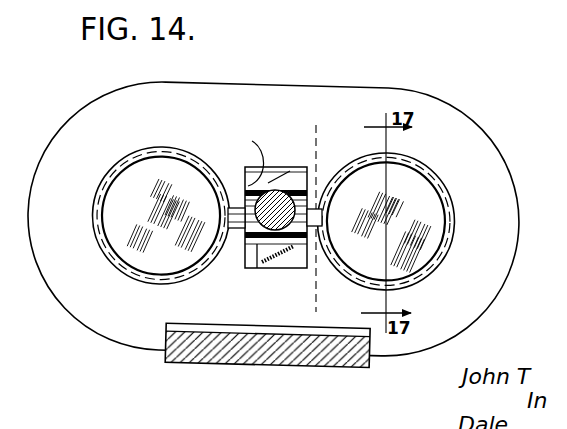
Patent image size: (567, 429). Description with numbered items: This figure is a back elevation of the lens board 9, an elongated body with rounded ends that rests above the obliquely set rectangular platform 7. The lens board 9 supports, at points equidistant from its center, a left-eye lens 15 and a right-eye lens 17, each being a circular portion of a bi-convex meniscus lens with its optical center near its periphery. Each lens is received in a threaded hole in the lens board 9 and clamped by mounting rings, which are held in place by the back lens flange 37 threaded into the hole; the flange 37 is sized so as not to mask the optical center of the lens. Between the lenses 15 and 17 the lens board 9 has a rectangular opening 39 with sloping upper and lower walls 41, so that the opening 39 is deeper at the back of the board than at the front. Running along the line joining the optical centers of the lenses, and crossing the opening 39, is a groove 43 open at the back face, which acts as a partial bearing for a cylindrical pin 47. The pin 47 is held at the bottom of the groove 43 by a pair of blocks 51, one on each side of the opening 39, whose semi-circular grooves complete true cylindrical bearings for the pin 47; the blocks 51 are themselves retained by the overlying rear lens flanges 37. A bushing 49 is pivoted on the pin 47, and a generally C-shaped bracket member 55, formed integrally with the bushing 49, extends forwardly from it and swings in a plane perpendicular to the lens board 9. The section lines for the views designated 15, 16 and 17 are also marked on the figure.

The rectangular platform 7 is at (197, 355).
The lens board 9 is at (463, 312).
The left-eye lens 15 is at (431, 240).
The section line 16- 16 is at (291, 152).
The right-eye lens 17 is at (138, 250).
The back lens flange 37 is at (118, 166).
The rectangular opening 39 is at (267, 199).
The sloping upper and lower walls 41 is at (273, 183).
The groove 43 is at (247, 250).
The cylindrical pin 47 is at (251, 268).
The bushing 49 is at (245, 195).
The blocks 51 is at (240, 219).
The bracket member 55 is at (308, 199).